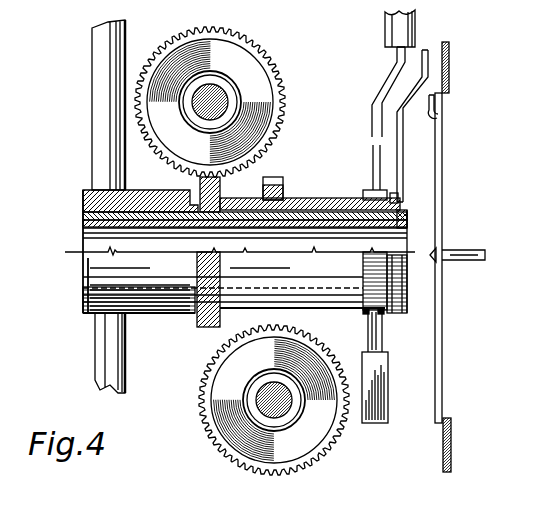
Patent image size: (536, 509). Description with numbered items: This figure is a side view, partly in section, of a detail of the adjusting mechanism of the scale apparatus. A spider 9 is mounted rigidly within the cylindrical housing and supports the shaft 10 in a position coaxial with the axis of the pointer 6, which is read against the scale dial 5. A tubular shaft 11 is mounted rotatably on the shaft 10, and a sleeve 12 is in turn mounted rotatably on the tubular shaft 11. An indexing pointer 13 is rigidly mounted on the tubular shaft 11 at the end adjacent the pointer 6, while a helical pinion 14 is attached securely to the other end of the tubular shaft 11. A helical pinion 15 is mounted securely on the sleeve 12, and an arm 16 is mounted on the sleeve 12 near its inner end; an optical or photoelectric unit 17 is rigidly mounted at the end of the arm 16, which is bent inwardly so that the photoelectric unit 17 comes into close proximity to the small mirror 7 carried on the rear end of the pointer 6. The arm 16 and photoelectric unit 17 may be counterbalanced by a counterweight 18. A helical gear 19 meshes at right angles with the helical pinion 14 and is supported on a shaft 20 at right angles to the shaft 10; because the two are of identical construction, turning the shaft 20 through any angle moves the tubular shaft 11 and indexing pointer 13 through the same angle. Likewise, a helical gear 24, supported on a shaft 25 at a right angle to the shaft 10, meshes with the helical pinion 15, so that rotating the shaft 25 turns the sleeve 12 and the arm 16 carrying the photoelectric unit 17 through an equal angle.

The scale dial 5 is at (450, 72).
The pointer 6 is at (441, 190).
The mirror 7 is at (438, 112).
The spider 9 is at (98, 65).
The shaft 10 is at (83, 222).
The tubular shaft 11 is at (393, 195).
The sleeve 12 is at (305, 200).
The indexing pointer 13 is at (405, 135).
The helical pinion 14 is at (197, 318).
The helical pinion 15 is at (275, 178).
The arm 16 is at (372, 113).
The photoelectric unit 17 is at (392, 30).
The counterweight 18 is at (366, 422).
The helical gear 19 is at (235, 60).
The shaft 20 is at (200, 112).
The helical gear 24 is at (245, 445).
The shaft 25 is at (262, 394).